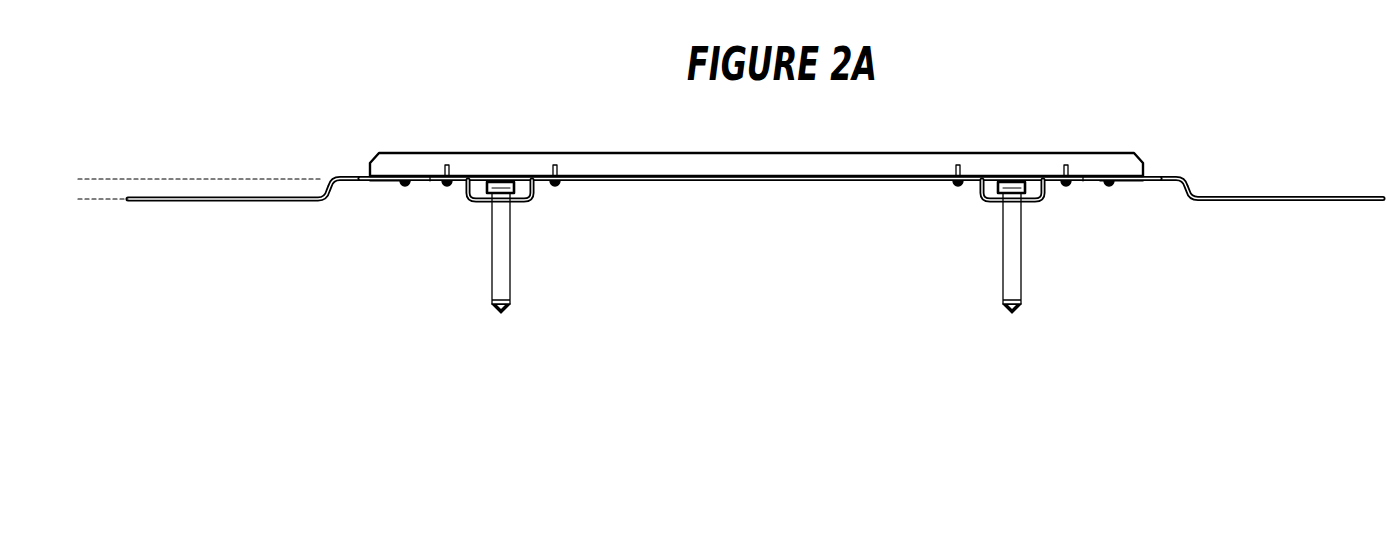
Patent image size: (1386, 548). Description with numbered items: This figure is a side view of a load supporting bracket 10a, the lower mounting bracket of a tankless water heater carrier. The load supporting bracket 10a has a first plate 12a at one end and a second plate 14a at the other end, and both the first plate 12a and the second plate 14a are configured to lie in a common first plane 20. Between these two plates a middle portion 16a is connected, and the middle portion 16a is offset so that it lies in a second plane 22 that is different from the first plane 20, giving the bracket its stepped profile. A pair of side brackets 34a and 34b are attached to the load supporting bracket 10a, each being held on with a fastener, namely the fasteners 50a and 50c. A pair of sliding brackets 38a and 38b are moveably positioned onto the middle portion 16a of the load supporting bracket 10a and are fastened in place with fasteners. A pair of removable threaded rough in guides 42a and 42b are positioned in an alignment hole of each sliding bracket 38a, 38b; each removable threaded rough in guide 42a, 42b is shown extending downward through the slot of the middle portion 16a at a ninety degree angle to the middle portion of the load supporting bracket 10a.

The load supporting bracket 10a is at (383, 332).
The first plate 12a is at (228, 202).
The second plate 14a is at (1288, 201).
The middle portion 16a is at (759, 181).
The first plane 20 is at (106, 201).
The second plane 22 is at (178, 177).
The side bracket 34a is at (385, 183).
The side bracket 34b is at (1128, 183).
The sliding bracket 38a is at (474, 199).
The sliding bracket 38b is at (1040, 199).
The removable threaded rough in guide 42a is at (511, 247).
The removable threaded rough in guide 42b is at (1002, 247).
The fastener 50a is at (404, 186).
The fastener 50c is at (1110, 186).